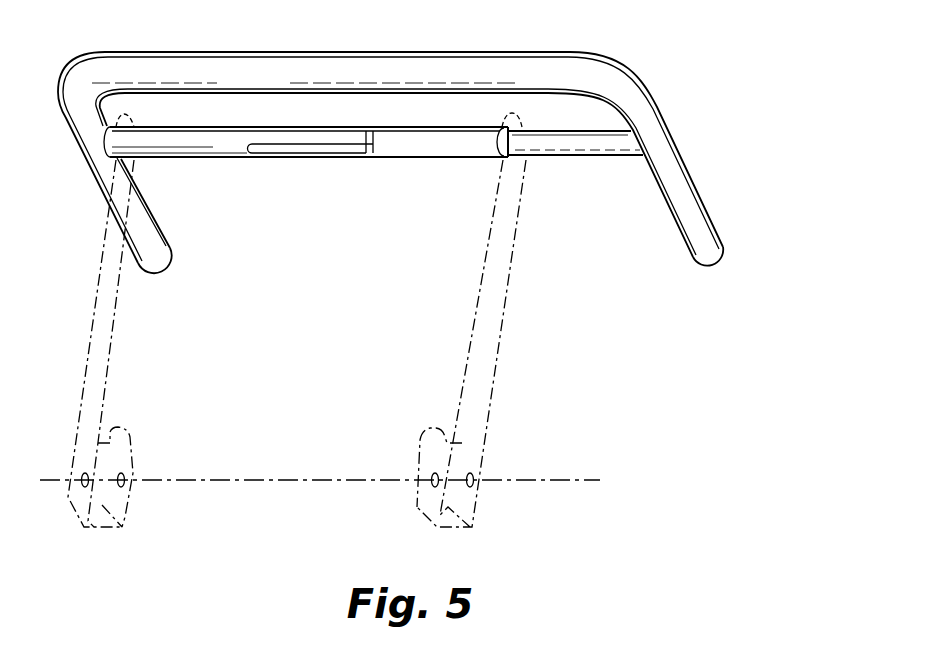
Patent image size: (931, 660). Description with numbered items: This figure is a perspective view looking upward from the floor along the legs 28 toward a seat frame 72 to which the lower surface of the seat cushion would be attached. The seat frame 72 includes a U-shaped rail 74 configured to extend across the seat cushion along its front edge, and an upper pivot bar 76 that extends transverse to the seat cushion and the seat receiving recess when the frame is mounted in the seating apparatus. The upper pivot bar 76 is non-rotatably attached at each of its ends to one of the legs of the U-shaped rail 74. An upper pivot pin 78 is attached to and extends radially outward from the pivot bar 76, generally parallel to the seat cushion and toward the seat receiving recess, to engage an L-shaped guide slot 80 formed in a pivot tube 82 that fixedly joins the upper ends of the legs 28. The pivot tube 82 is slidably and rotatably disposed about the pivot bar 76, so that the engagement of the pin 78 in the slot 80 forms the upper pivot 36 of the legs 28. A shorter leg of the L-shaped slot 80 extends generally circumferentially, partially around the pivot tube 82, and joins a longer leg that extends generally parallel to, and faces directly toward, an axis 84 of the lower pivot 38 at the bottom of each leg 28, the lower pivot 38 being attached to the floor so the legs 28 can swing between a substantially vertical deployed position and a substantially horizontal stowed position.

The legs 28 is at (112, 343).
The upper pivot 36 is at (524, 122).
The lower pivot 38 is at (125, 484).
The seat frame 72 is at (100, 229).
The U-shaped rail 74 is at (690, 215).
The upper pivot bar 76 is at (603, 150).
The upper pivot pin 78 is at (378, 132).
The L-shaped guide slot 80 is at (318, 158).
The pivot tube 82 is at (440, 145).
The axis 84 is at (554, 480).